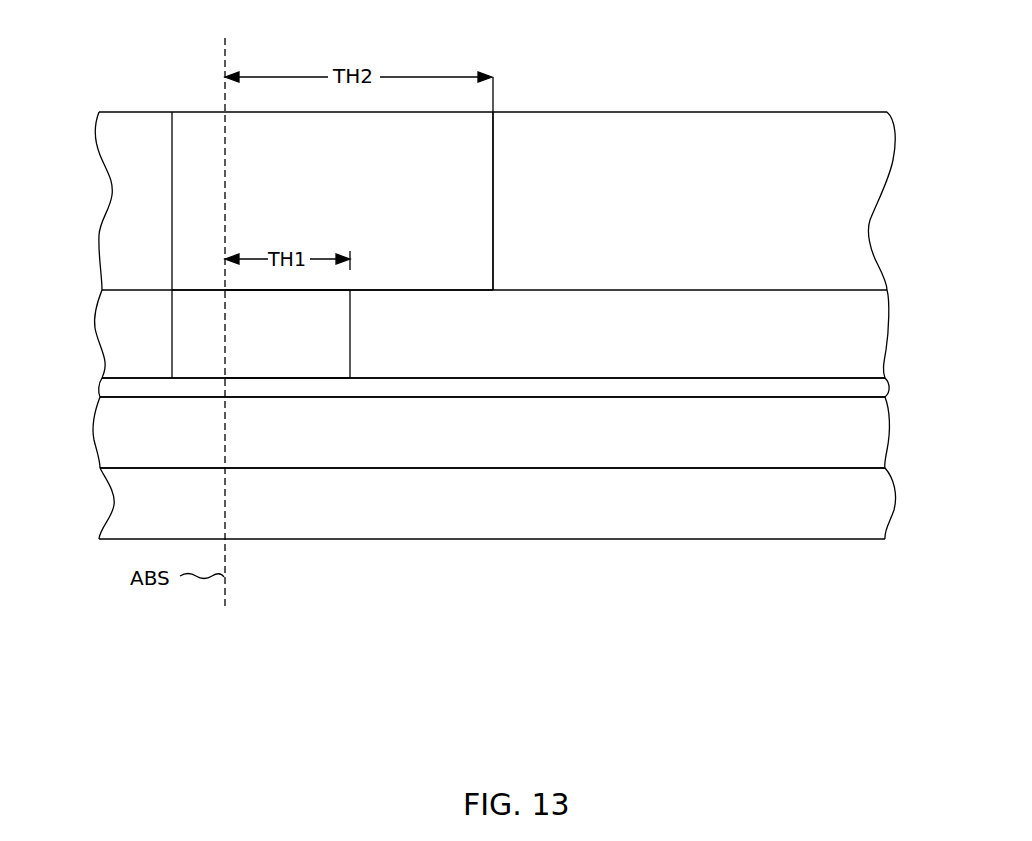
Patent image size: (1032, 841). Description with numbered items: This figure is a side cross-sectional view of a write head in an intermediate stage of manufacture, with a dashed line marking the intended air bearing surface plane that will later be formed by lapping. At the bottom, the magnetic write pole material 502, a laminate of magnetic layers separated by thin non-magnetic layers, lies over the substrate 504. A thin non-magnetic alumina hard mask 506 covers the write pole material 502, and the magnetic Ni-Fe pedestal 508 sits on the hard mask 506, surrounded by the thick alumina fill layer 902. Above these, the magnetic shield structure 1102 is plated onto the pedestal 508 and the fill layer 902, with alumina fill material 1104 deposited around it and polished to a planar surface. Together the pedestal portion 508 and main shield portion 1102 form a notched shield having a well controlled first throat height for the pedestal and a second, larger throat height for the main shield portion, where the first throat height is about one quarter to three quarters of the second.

The fill material 1104 is at (125, 192).
The magnetic shield structure 1102 is at (377, 183).
The alumina fill layer 902 is at (120, 339).
The magnetic pedestal 508 is at (306, 341).
The non-magnetic hard mask 506 is at (672, 388).
The magnetic write pole material 502 is at (540, 432).
The substrate 504 is at (540, 505).